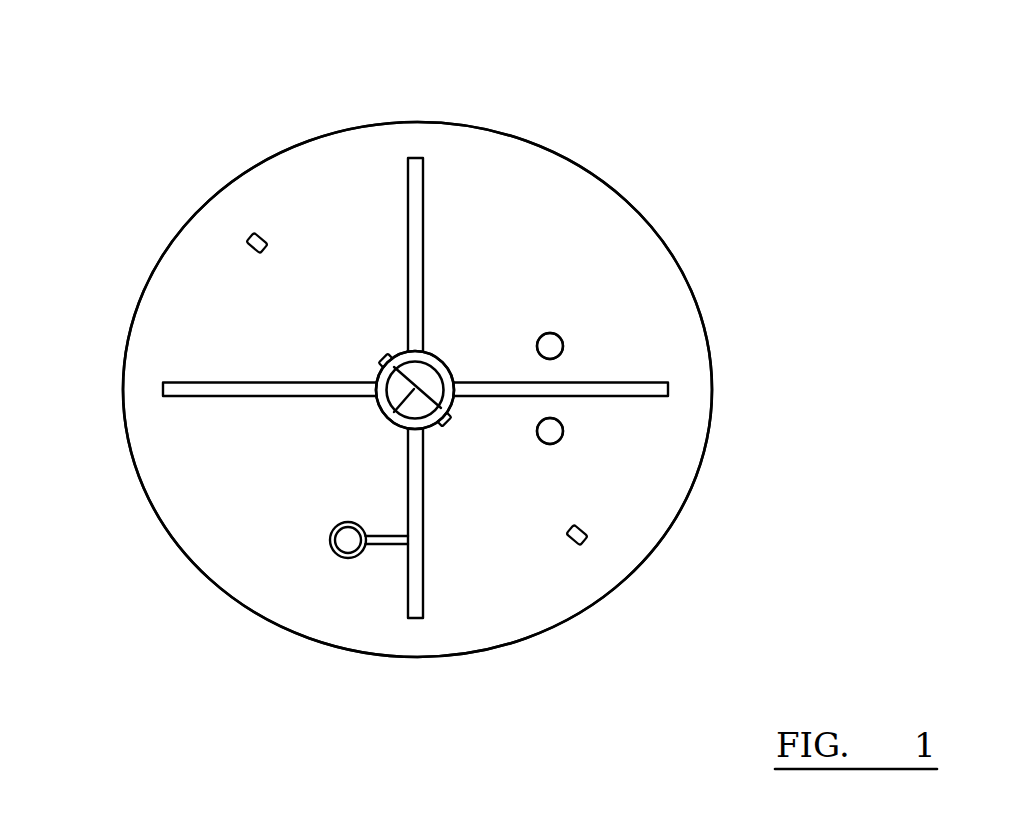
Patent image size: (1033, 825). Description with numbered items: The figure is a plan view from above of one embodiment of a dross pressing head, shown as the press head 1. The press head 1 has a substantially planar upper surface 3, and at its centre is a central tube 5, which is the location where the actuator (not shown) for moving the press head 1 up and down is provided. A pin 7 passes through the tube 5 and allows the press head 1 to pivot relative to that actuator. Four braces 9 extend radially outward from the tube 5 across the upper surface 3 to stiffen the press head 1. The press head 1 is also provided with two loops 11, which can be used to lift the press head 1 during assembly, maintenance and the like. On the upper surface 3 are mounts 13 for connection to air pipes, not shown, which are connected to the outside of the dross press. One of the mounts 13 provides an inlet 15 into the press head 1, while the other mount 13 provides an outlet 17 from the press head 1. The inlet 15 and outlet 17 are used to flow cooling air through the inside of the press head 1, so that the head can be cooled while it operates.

The press head 1 is at (642, 203).
The upper surface 3 is at (472, 192).
The central tube 5 is at (447, 362).
The pin 7 is at (390, 417).
The braces 9 is at (413, 177).
The loops 11 is at (256, 236).
The mounts 13 is at (565, 346).
The inlet 15 is at (565, 431).
The outlet 17 is at (551, 338).